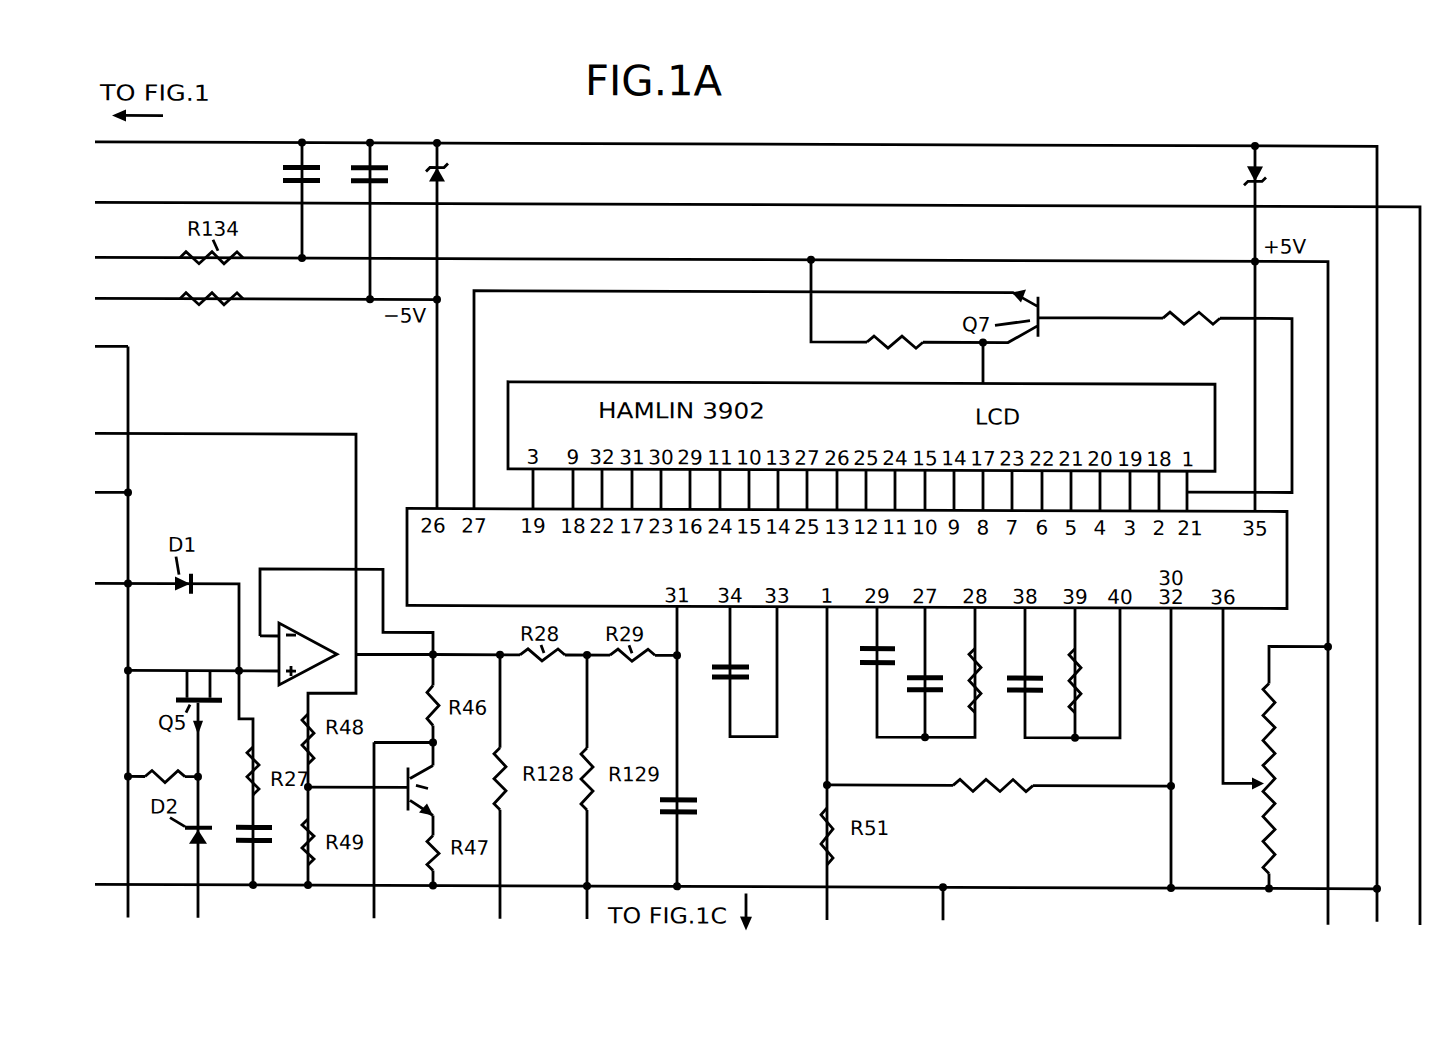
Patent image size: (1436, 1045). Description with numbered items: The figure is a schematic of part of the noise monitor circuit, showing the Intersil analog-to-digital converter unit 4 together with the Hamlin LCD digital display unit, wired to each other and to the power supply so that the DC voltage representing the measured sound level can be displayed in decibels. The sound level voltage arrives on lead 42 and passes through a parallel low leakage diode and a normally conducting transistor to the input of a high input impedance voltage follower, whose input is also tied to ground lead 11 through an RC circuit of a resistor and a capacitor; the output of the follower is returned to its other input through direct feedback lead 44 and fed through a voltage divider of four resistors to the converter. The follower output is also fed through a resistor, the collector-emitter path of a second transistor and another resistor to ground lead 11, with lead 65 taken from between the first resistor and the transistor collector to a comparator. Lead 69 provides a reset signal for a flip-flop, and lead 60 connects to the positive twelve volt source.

The lead 42 is at (128, 391).
The direct feedback lead 44 is at (306, 568).
The lead 60 is at (1406, 202).
The lead 65 is at (393, 741).
The lead 69 is at (265, 826).
The ground lead 11 is at (1003, 884).
The analog-to-digital converter ICL7116 4 is at (847, 558).